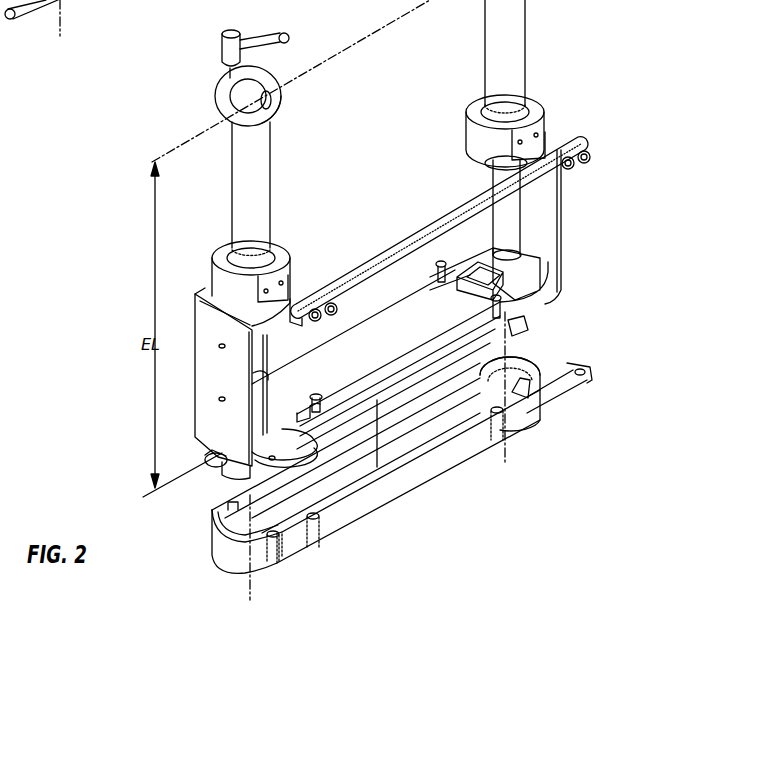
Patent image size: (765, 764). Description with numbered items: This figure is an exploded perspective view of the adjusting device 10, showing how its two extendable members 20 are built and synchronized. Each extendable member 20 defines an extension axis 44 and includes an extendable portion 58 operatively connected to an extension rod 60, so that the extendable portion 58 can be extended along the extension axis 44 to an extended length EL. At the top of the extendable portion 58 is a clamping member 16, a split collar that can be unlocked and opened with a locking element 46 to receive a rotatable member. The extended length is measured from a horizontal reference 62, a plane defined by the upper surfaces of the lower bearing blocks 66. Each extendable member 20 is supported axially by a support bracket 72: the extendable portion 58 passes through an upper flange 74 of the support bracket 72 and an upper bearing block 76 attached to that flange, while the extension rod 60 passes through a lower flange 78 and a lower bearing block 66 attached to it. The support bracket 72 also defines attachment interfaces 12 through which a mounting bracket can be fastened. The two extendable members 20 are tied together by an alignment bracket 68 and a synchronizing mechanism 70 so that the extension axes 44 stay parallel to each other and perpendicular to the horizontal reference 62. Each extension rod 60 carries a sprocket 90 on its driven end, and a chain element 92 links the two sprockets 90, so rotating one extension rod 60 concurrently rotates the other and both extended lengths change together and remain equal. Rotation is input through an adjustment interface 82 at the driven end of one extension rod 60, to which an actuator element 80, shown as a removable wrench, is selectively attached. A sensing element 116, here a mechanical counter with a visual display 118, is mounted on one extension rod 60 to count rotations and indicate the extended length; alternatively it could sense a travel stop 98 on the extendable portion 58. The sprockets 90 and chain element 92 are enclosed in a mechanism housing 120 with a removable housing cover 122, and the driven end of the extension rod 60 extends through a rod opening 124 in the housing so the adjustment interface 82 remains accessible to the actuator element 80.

The adjusting device 10 is at (80, 282).
The attachment interfaces 12 is at (219, 345).
The clamping member 16 is at (216, 92).
The extendable member 20 is at (320, 182).
The extension axis 44 is at (66, 16).
The locking element 46 is at (281, 36).
The extendable portion 58 is at (280, 152).
The extension rod 60 is at (268, 397).
The horizontal reference 62 is at (167, 490).
The lower bearing block 66 is at (212, 466).
The alignment bracket 68 is at (446, 209).
The synchronizing mechanism 70 is at (568, 310).
The support bracket 72 is at (563, 251).
The upper flange 74 is at (197, 292).
The upper bearing block 76 is at (292, 259).
The lower flange 78 is at (270, 433).
The actuator element 80 is at (20, 16).
The adjustment interface 82 is at (530, 343).
The sprocket 90 is at (232, 480).
The chain element 92 is at (401, 388).
The travel stop 98 is at (272, 365).
The sensing element 116 is at (466, 284).
The visual display 118 is at (487, 273).
The mechanism housing 120 is at (425, 482).
The removable housing cover 122 is at (404, 321).
The rod opening 124 is at (514, 393).